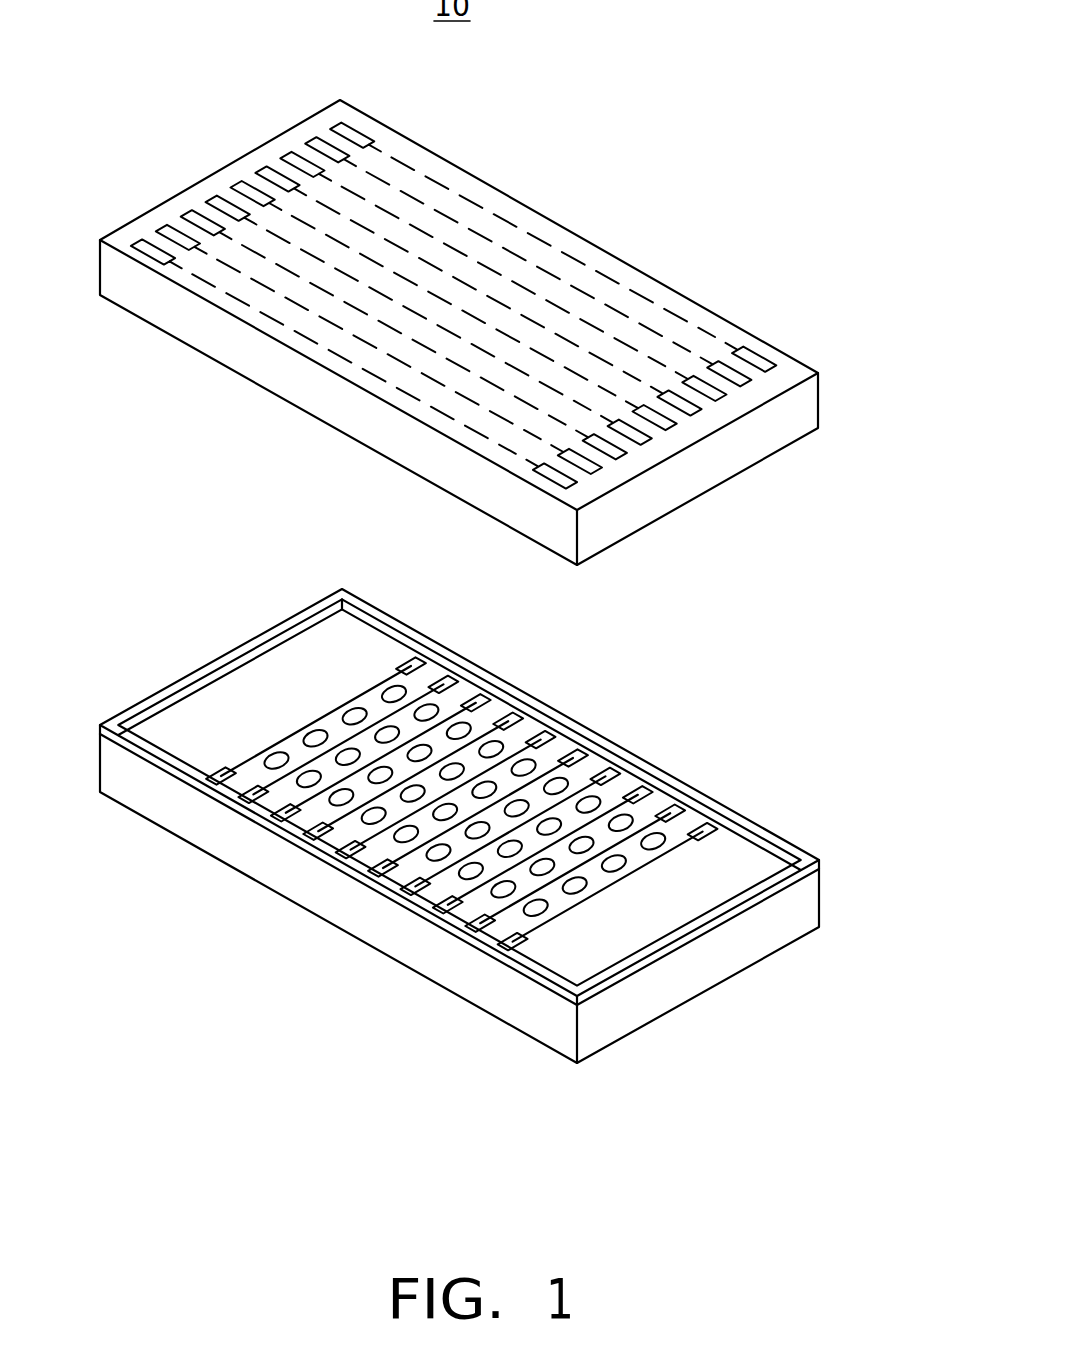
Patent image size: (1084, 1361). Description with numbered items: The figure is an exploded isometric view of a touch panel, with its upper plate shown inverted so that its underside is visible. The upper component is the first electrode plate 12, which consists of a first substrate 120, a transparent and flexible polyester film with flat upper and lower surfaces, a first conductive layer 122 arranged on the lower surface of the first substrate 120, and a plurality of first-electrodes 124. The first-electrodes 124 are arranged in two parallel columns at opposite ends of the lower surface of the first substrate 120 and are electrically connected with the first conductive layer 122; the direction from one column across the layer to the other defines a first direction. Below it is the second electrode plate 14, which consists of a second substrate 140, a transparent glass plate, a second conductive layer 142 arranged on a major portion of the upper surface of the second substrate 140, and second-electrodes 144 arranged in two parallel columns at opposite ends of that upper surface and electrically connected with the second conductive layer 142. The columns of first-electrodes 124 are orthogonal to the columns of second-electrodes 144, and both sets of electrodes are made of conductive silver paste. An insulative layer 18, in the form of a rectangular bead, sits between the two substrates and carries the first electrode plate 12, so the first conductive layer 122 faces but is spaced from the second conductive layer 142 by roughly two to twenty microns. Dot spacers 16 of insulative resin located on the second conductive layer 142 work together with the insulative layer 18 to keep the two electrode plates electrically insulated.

The first electrode plate 12 is at (519, 326).
The first substrate 120 is at (797, 408).
The first conductive layer 122 is at (478, 240).
The first-electrodes 124 is at (262, 178).
The second electrode plate 14 is at (459, 841).
The second substrate 140 is at (422, 946).
The second conductive layer 142 is at (311, 722).
The second-electrodes 144 is at (515, 716).
The dot spacers 16 is at (650, 836).
The insulative layer 18 is at (320, 853).